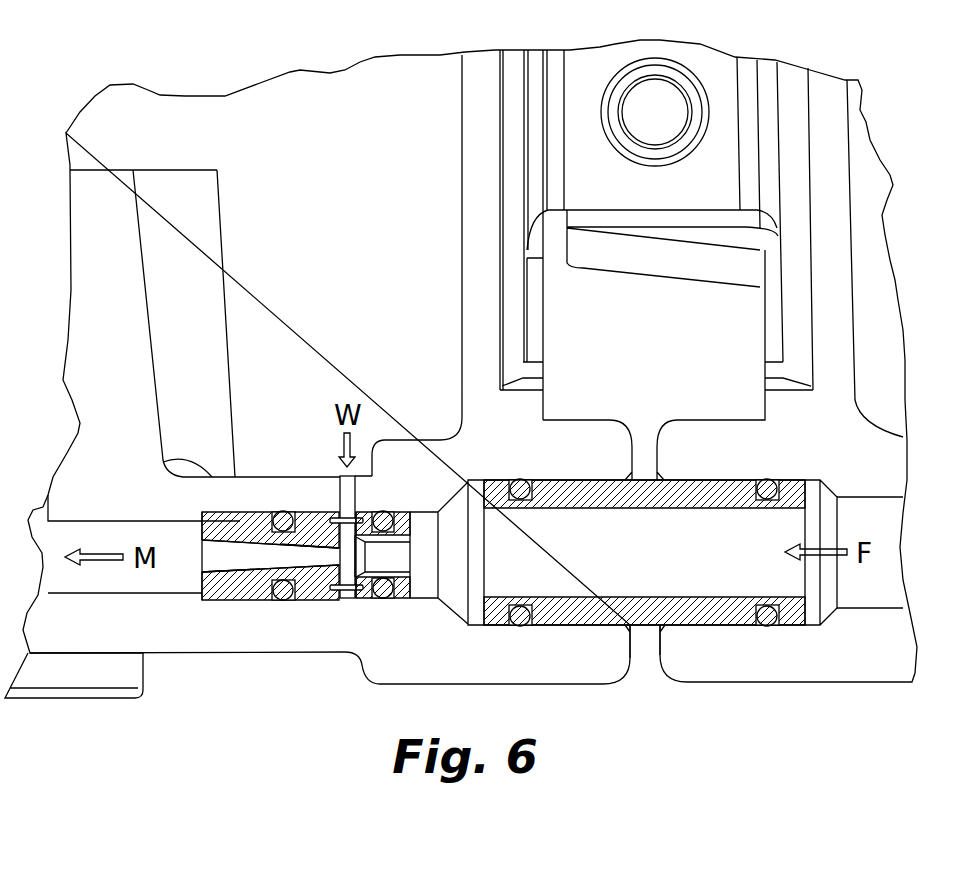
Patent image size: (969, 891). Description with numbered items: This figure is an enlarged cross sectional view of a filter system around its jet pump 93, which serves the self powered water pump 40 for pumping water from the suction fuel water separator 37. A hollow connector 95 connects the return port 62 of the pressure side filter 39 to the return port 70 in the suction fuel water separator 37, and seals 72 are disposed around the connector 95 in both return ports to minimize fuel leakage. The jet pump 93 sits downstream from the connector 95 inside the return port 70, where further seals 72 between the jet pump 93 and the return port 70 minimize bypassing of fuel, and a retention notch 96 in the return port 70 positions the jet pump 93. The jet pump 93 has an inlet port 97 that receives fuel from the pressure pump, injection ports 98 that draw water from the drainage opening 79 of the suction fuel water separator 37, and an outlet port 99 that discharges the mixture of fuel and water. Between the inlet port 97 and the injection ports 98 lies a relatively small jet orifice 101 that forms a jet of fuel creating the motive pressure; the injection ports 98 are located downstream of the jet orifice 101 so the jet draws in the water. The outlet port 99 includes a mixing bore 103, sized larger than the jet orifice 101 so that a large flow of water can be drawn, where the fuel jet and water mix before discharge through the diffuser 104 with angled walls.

The suction fuel water separator 37 is at (488, 77).
The pressure side filter 39 is at (832, 103).
The self powered water pump 40 is at (252, 485).
The return port 62 is at (865, 580).
The return port 70 is at (481, 628).
The seals 72 is at (386, 600).
The drainage opening 79 is at (362, 485).
The jet pump 93 is at (305, 600).
The hollow connector 95 is at (642, 627).
The retention notch 96 is at (197, 598).
The inlet port 97 is at (400, 525).
The injection ports 98 is at (358, 503).
The outlet port 99 is at (220, 545).
The jet orifice 101 is at (357, 548).
The mixing bore 103 is at (308, 545).
The diffuser 104 is at (228, 580).